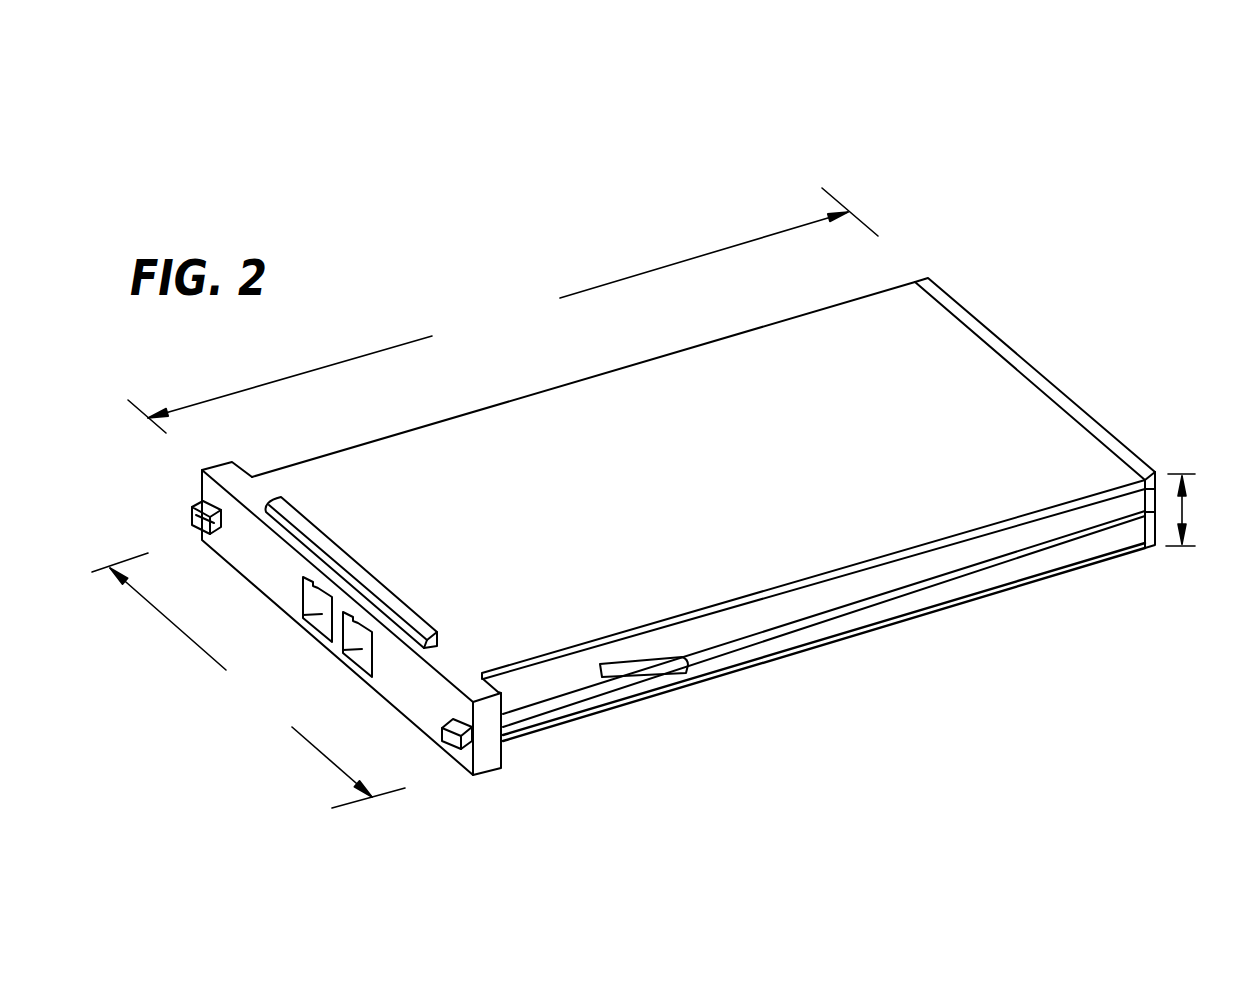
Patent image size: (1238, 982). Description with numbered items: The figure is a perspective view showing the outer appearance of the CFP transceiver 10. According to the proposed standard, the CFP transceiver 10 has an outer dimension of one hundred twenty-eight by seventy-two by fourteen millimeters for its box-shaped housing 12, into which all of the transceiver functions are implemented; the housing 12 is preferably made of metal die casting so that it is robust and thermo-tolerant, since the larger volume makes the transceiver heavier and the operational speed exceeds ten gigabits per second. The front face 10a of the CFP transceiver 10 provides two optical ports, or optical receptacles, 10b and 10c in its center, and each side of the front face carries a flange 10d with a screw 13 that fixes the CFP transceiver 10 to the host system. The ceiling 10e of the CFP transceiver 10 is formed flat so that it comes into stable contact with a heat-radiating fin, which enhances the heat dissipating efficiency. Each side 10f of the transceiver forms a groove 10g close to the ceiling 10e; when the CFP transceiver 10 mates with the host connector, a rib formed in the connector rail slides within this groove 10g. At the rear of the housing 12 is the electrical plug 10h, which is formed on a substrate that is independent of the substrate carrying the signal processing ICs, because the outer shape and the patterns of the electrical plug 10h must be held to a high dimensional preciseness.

The CFP transceiver 10 is at (932, 170).
The front face 10a is at (415, 690).
The optical port 10b is at (332, 609).
The optical port 10c is at (372, 646).
The flange 10d is at (202, 491).
The ceiling 10e is at (673, 420).
The side 10f is at (775, 633).
The groove 10g is at (1057, 540).
The electrical plug 10h is at (955, 303).
The housing 12 is at (997, 413).
The screw 13 is at (190, 518).